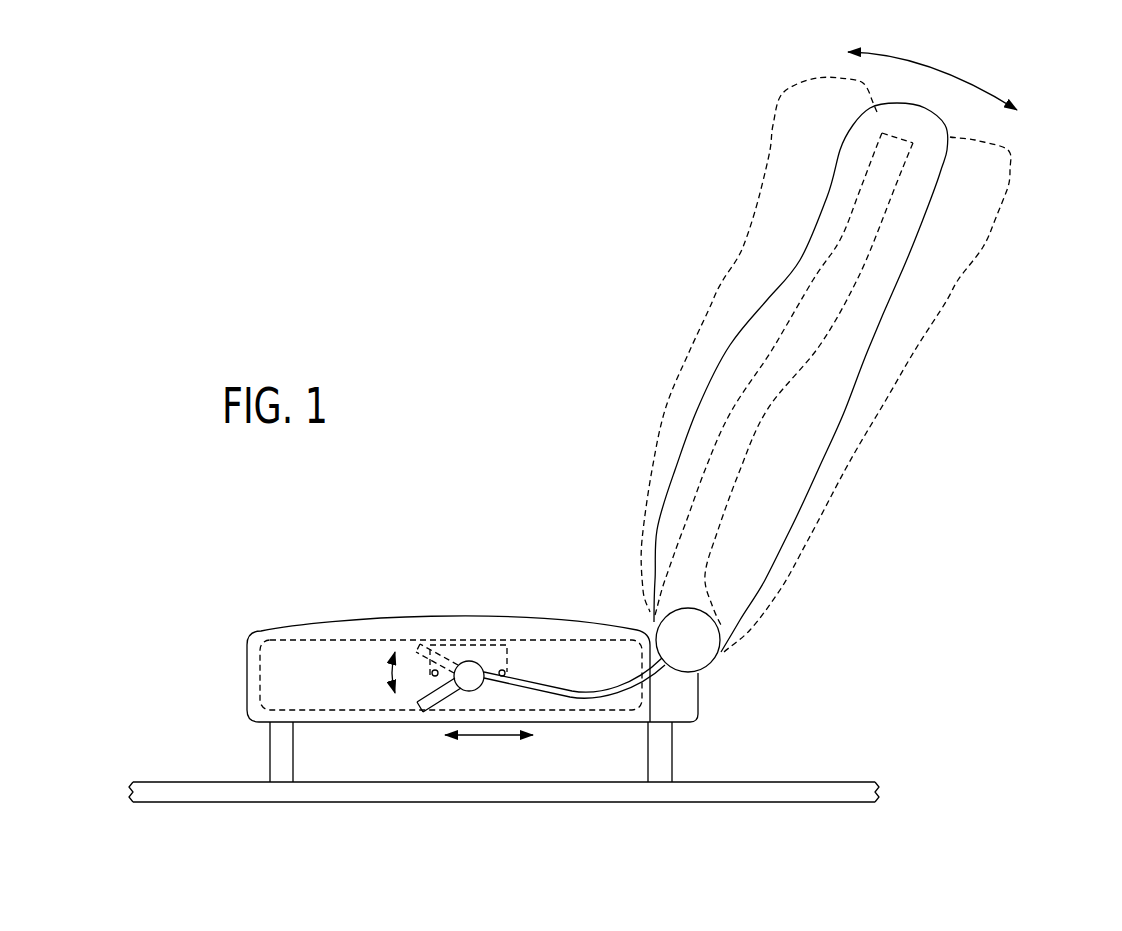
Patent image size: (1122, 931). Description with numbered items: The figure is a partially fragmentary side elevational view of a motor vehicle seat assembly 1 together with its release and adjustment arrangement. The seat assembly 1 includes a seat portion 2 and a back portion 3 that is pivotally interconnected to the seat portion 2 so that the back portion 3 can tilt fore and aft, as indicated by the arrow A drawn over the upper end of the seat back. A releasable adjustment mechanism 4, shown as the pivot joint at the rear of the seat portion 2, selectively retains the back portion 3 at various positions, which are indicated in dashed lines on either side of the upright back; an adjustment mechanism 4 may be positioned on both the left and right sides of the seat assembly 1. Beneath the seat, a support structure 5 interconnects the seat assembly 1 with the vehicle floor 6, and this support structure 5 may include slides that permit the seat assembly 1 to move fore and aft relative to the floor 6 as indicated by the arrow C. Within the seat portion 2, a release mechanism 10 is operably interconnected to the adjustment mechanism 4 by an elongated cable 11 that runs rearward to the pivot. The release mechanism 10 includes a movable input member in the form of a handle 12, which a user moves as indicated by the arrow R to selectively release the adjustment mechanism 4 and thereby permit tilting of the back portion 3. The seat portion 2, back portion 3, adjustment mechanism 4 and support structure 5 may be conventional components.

The seat assembly 1 is at (240, 638).
The seat portion 2 is at (405, 615).
The back portion 3 is at (843, 413).
The adjustment mechanism 4 is at (703, 660).
The support structure 5 is at (293, 757).
The vehicle floor 6 is at (840, 782).
The release mechanism 10 is at (478, 653).
The elongated cable 11 is at (568, 700).
The handle 12 is at (437, 700).